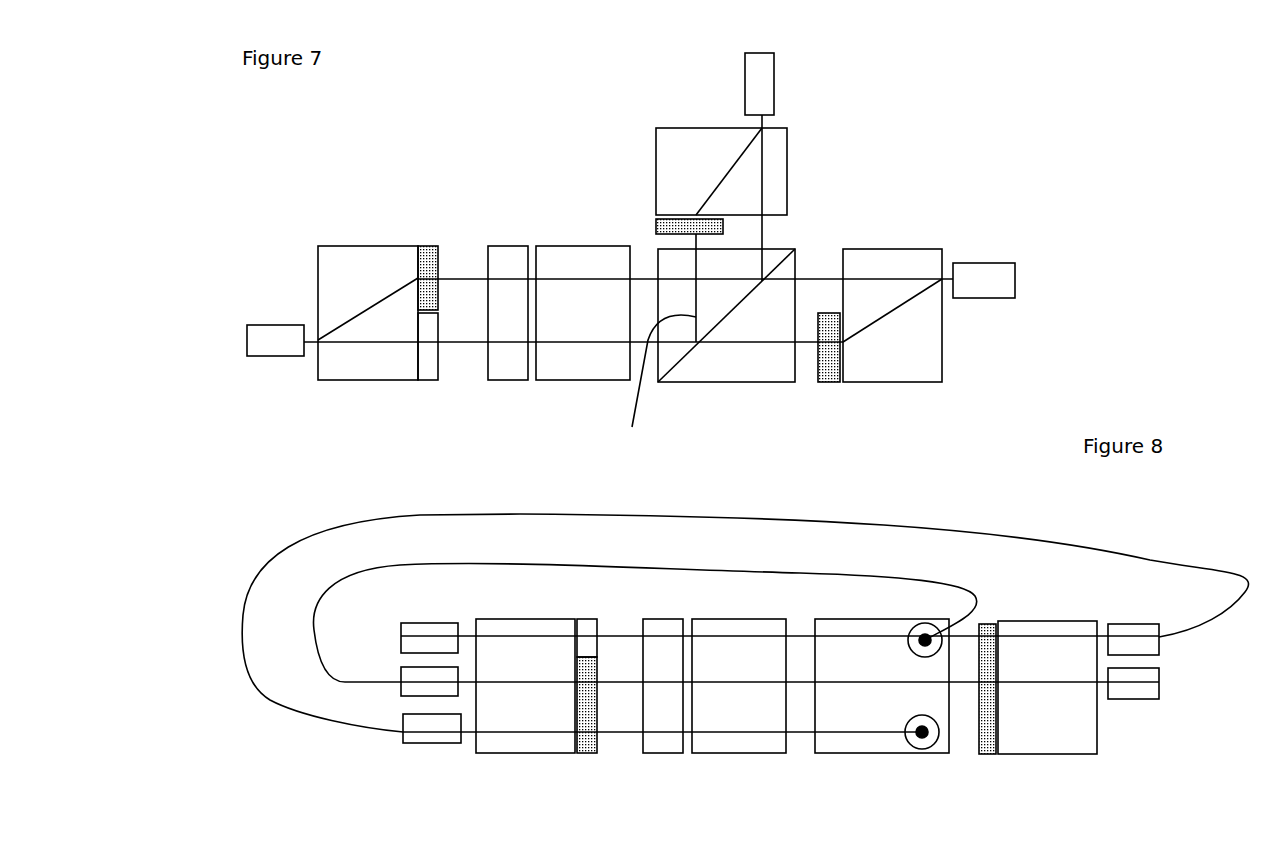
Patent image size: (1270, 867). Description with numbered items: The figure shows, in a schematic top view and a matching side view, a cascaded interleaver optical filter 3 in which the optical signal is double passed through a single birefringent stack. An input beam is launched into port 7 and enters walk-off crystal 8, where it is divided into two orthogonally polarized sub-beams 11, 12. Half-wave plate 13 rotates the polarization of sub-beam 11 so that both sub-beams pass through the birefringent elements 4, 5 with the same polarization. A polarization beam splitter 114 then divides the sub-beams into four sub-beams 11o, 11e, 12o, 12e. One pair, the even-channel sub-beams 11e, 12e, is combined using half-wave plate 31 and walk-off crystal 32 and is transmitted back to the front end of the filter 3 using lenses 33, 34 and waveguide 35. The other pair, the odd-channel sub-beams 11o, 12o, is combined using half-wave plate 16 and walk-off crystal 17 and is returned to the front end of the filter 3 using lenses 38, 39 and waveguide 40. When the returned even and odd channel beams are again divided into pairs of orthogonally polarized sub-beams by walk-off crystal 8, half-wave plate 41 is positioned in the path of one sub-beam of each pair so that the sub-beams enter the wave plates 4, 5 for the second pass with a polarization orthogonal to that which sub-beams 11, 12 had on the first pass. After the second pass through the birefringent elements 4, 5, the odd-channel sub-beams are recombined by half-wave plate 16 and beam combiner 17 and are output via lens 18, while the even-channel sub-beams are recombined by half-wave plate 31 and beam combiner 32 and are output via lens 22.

In FIG. 7, the filter 3 is at (518, 211).
In FIG. 7, the birefringent element 4 is at (503, 380).
In FIG. 8, the birefringent element 4 is at (665, 754).
In FIG. 7, the birefringent element 5 is at (565, 246).
In FIG. 8, the birefringent element 5 is at (773, 754).
In FIG. 7, the port 7 is at (262, 325).
In FIG. 7, the walk-off crystal 8 is at (350, 380).
In FIG. 8, the walk-off crystal 8 is at (530, 755).
In FIG. 7, the sub-beam 11 is at (467, 279).
In FIG. 7, the sub-beam 12 is at (463, 342).
In FIG. 7, the half-wave plate 13 is at (428, 246).
In FIG. 8, the half-wave plate 13 is at (587, 619).
In FIG. 7, the half-wave plate 16 is at (833, 382).
In FIG. 8, the half-wave plate 16 is at (987, 754).
In FIG. 7, the walk-off crystal 17 is at (905, 255).
In FIG. 8, the walk-off crystal 17 is at (1075, 755).
In FIG. 8, the lens 18 is at (1142, 699).
In FIG. 8, the lens 22 is at (925, 743).
In FIG. 7, the half-wave plate 31 is at (652, 220).
In FIG. 7, the walk-off crystal 32 is at (690, 128).
In FIG. 7, the lens 33 is at (770, 82).
In FIG. 8, the lens 33 is at (917, 628).
In FIG. 8, the lens 34 is at (407, 698).
In FIG. 8, the waveguide 35 is at (323, 650).
In FIG. 7, the lens 38 is at (993, 298).
In FIG. 8, the lens 38 is at (1132, 624).
In FIG. 8, the lens 39 is at (415, 622).
In FIG. 8, the waveguide 40 is at (1242, 592).
In FIG. 7, the half-wave plate 41 is at (427, 380).
In FIG. 8, the half-wave plate 41 is at (585, 753).
In FIG. 7, the polarization beam splitter 114 is at (724, 382).
In FIG. 8, the polarization beam splitter 114 is at (858, 754).
In FIG. 7, the sub-beam 11e is at (762, 240).
In FIG. 7, the sub-beam 11o is at (815, 279).
In FIG. 7, the sub-beam 12e is at (650, 391).
In FIG. 7, the sub-beam 12o is at (805, 342).